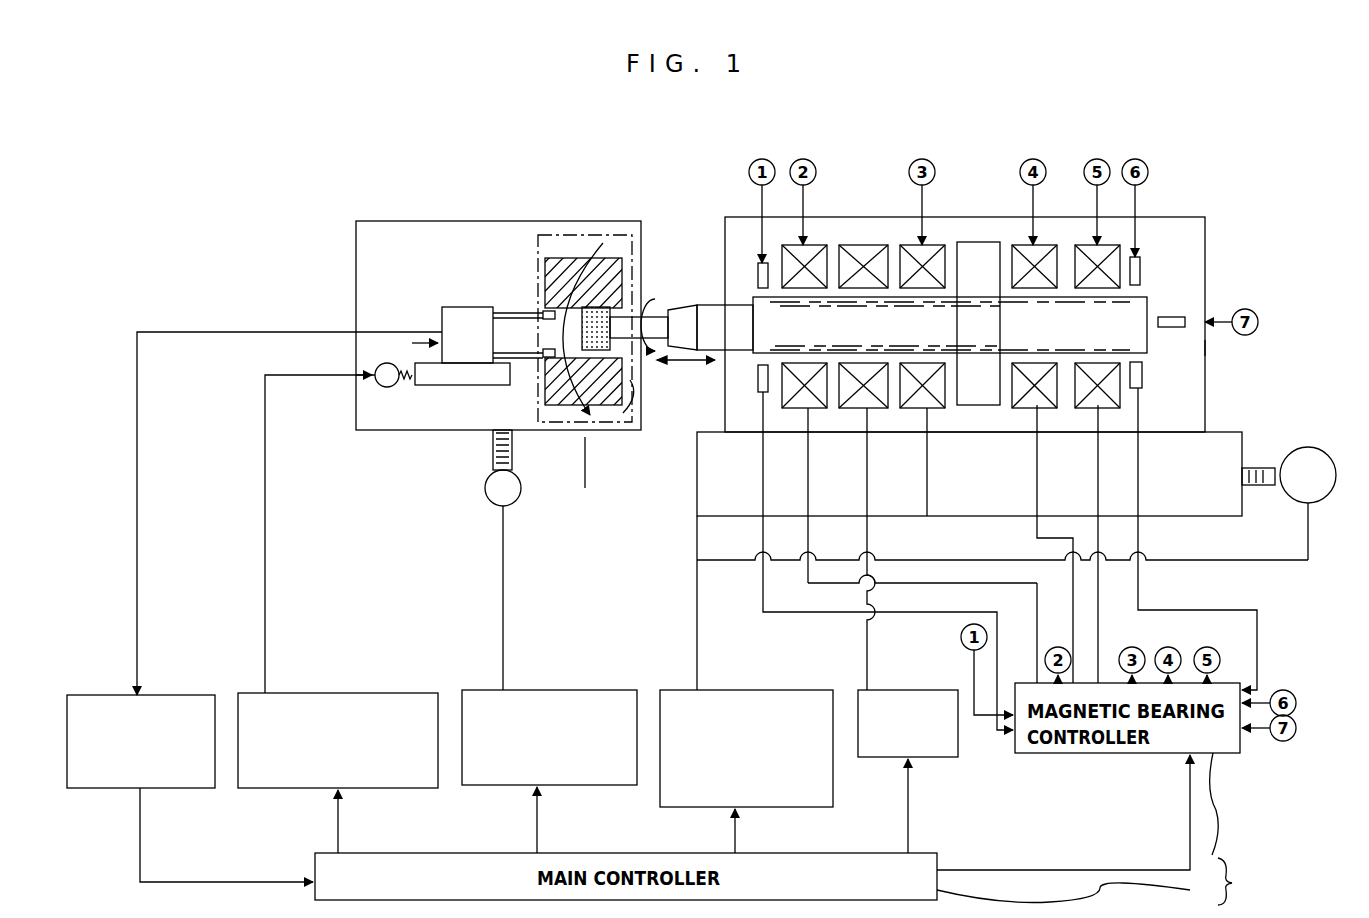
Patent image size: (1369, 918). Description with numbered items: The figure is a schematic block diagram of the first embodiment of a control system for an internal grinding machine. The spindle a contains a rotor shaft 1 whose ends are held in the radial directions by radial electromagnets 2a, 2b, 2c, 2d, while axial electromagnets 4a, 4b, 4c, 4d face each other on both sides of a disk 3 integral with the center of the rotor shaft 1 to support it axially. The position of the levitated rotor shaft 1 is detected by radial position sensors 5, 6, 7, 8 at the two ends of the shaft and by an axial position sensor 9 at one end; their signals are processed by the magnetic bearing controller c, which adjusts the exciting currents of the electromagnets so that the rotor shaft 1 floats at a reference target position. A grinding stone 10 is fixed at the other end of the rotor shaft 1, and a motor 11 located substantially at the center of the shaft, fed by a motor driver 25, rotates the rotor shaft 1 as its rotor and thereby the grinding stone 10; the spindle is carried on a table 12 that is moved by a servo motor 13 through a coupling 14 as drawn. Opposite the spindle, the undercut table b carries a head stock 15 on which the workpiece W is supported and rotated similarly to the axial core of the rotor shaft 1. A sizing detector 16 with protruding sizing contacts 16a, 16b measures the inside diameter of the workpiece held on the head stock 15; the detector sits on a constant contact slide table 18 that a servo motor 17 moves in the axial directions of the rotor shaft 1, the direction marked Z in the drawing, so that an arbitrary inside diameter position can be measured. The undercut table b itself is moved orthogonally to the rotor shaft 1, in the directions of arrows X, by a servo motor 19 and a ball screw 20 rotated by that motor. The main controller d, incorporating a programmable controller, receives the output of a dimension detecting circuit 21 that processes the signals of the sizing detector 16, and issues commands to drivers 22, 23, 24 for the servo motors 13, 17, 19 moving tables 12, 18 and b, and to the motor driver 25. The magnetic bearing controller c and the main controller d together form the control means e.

The rotor shaft 1 is at (790, 341).
The radial electromagnet 2a is at (797, 410).
The radial electromagnet 2b is at (820, 245).
The radial electromagnet 2c is at (1105, 410).
The radial electromagnet 2d is at (1088, 250).
The disk 3 is at (975, 262).
The axial electromagnet 4a is at (925, 410).
The axial electromagnet 4b is at (938, 245).
The axial electromagnet 4c is at (1047, 410).
The axial electromagnet 4d is at (1022, 250).
The radial position sensor 5 is at (758, 378).
The radial position sensor 6 is at (757, 268).
The radial position sensor 7 is at (1143, 375).
The radial position sensor 8 is at (1142, 270).
The axial position sensor 9 is at (1205, 348).
The grinding stone 10 is at (626, 312).
The motor 11 is at (872, 410).
The table 12 is at (1192, 466).
The servo motor 13 is at (1322, 483).
The coupling 14 is at (1258, 487).
The head stock 15 is at (605, 240).
The sizing detector 16 is at (462, 315).
The sizing contact 16a is at (510, 319).
The sizing contact 16b is at (524, 360).
The servo motor 17 is at (392, 387).
The constant contact slide table 18 is at (458, 380).
The servo motor 19 is at (517, 497).
The ball screw 20 is at (492, 452).
The dimension detecting circuit 21 is at (187, 694).
The driver 22 is at (807, 694).
The driver 23 is at (411, 694).
The driver 24 is at (609, 694).
The motor driver 25 is at (931, 694).
The spindle a is at (1177, 217).
The undercut table b is at (408, 221).
The magnetic bearing controller c is at (1074, 817).
The main controller d is at (1075, 891).
The control means e is at (1246, 892).
The workpiece W is at (612, 402).
The arrows X is at (587, 462).
The Z axis Z is at (686, 362).